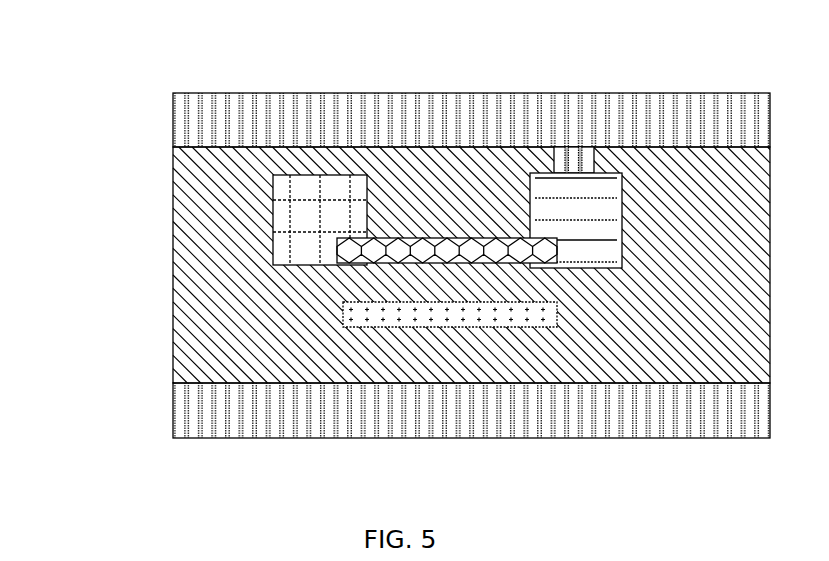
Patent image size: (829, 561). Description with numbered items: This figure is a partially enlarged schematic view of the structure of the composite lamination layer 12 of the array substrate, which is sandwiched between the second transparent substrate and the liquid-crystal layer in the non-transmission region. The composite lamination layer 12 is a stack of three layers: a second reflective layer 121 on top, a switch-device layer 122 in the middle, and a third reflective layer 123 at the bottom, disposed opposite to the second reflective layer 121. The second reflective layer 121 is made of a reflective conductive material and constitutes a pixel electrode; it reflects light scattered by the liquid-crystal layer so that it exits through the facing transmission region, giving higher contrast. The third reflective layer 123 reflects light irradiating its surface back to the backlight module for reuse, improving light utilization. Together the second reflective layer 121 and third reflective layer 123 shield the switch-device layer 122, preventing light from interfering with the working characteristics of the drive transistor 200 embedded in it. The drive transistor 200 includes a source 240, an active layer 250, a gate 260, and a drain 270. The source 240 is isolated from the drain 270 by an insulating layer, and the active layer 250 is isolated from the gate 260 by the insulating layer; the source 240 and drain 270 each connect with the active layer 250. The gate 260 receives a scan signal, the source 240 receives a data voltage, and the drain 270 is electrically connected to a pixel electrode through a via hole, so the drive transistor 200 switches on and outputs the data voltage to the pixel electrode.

The composite lamination layer 12 is at (85, 78).
The second reflective layer 121 is at (173, 120).
The switch-device layer 122 is at (173, 265).
The third reflective layer 123 is at (173, 409).
The drive transistor 200 is at (573, 45).
The source 240 is at (316, 175).
The active layer 250 is at (426, 238).
The gate 260 is at (493, 302).
The drain 270 is at (568, 173).